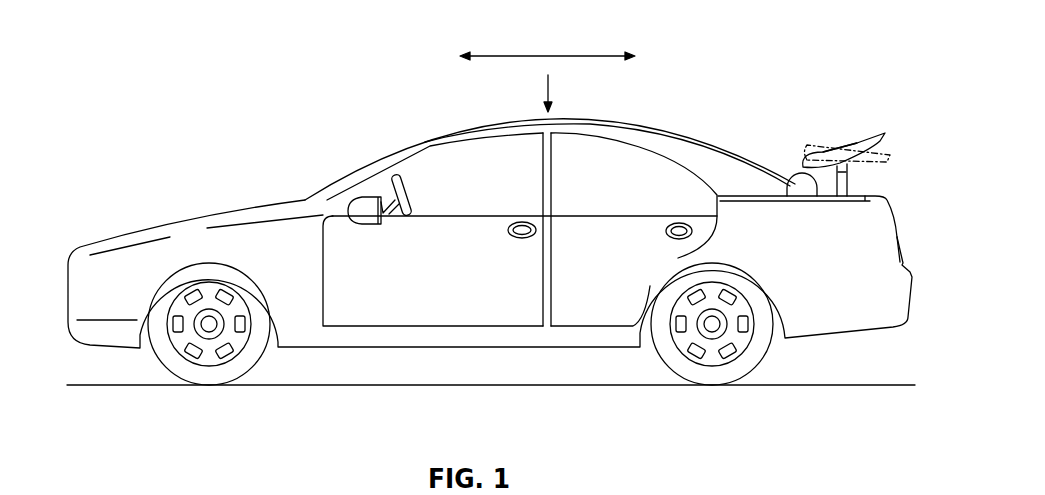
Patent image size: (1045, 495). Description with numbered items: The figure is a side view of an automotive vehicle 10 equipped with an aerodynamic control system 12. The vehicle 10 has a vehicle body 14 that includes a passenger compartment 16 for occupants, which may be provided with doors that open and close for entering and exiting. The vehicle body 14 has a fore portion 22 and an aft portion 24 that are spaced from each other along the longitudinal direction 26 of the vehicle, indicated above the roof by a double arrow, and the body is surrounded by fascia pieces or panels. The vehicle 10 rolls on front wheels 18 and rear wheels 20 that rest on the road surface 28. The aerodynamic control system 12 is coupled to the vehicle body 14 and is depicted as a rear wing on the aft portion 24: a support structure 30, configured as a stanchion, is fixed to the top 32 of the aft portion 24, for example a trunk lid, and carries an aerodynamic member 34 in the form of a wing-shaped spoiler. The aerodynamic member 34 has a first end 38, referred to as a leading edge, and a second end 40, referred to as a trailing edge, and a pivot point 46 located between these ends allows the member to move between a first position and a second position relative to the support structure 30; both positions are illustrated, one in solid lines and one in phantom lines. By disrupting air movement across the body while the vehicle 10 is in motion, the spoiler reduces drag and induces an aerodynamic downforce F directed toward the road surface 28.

The automotive vehicle 10 is at (148, 140).
The aerodynamic control system 12 is at (868, 100).
The vehicle body 14 is at (263, 233).
The passenger compartment 16 is at (432, 168).
The front wheels 18 is at (242, 363).
The rear wheels 20 is at (747, 363).
The fore portion 22 is at (70, 282).
The aft portion 24 is at (900, 237).
The longitudinal direction 26 is at (548, 55).
The road surface 28 is at (542, 385).
The support structure 30 is at (850, 175).
The top of the aft portion 32 is at (793, 200).
The aerodynamic member 34 is at (860, 143).
The first end 38 is at (802, 167).
The second end 40 is at (883, 133).
The pivot point 46 is at (847, 177).
The aerodynamic downforce F is at (550, 95).